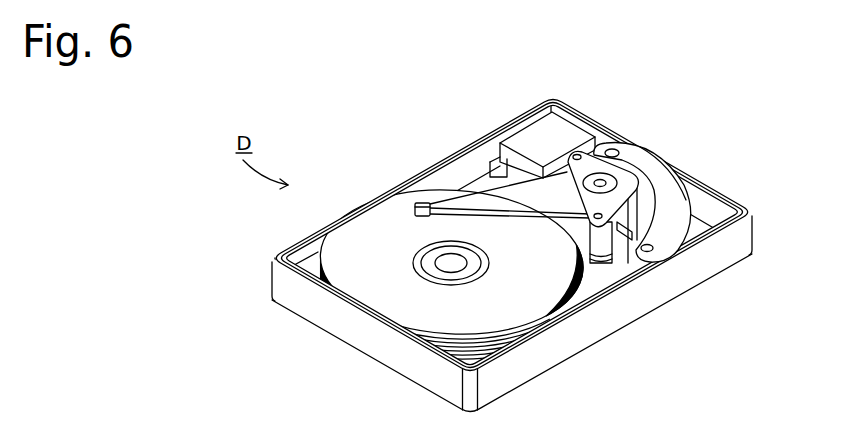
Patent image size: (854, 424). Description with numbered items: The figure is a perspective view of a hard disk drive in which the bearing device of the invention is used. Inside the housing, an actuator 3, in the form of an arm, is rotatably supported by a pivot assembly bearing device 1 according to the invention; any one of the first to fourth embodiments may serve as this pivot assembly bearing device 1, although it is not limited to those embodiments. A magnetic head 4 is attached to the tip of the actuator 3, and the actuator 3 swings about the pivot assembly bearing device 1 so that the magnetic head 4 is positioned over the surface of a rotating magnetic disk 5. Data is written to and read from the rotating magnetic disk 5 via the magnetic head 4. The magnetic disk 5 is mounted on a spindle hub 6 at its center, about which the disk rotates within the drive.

The pivot assembly bearing device 1 is at (608, 176).
The actuator 3 is at (463, 204).
The magnetic head 4 is at (421, 203).
The magnetic disk 5 is at (360, 231).
The spindle hub 6 is at (444, 262).